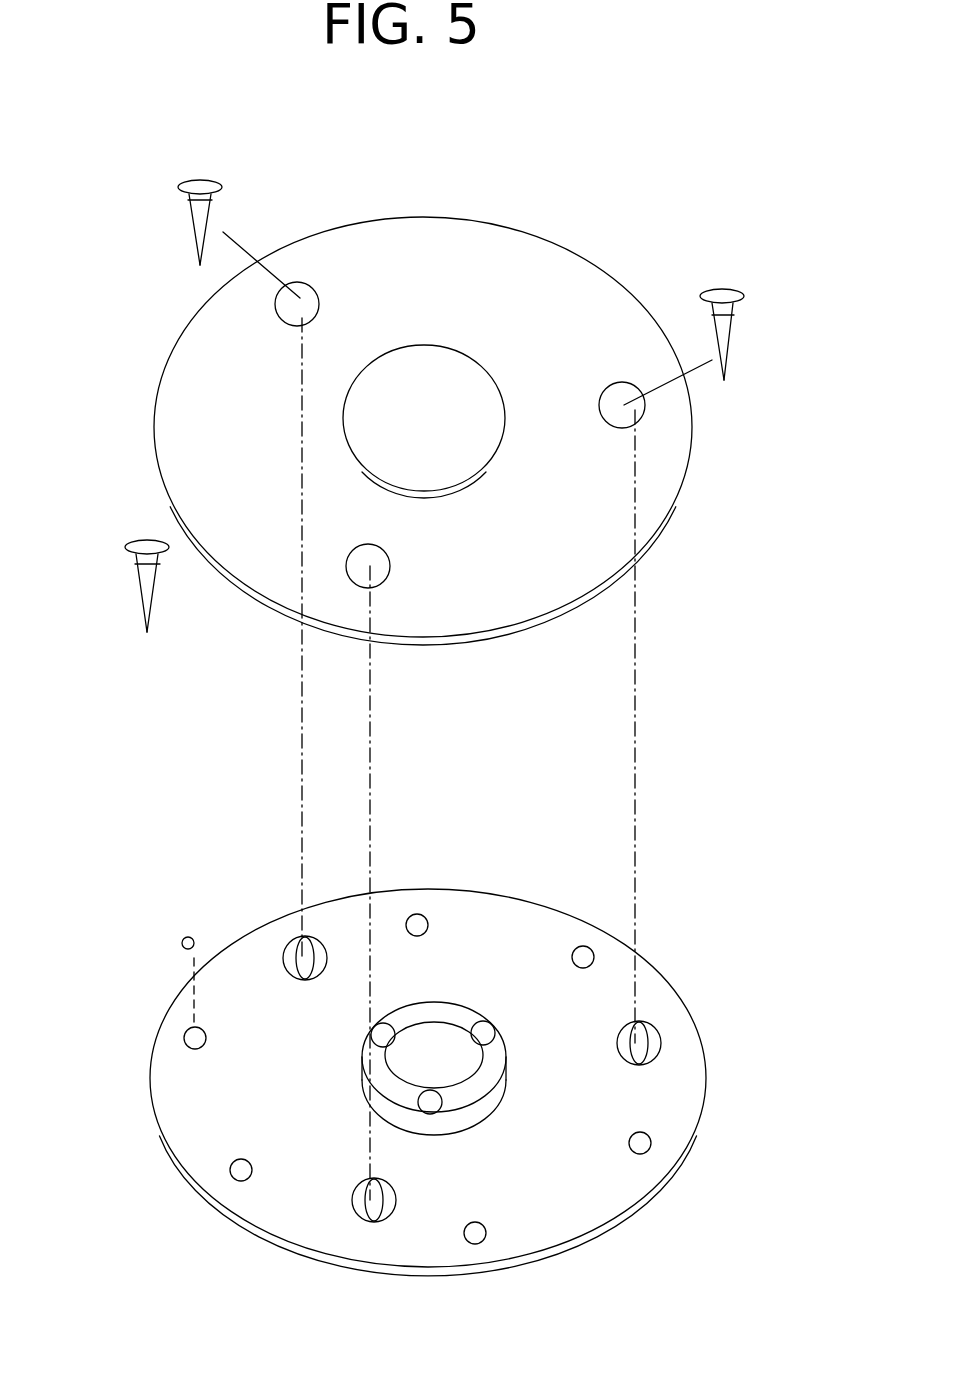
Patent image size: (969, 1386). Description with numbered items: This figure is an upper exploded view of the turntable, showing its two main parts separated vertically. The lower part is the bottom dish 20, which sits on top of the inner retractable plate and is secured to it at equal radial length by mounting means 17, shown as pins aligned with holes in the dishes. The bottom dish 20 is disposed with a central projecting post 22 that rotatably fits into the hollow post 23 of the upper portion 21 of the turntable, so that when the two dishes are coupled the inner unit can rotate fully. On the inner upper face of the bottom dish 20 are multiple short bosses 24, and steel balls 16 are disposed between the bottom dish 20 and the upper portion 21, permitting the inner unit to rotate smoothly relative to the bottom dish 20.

The steel balls 16 is at (183, 928).
The mounting means 17 is at (147, 532).
The bottom dish of turntable 20 is at (593, 999).
The upper portion of turntable 21 is at (545, 536).
The central projecting post 22 is at (438, 1057).
The hollow post 23 is at (413, 471).
The short bosses 24 is at (352, 1197).